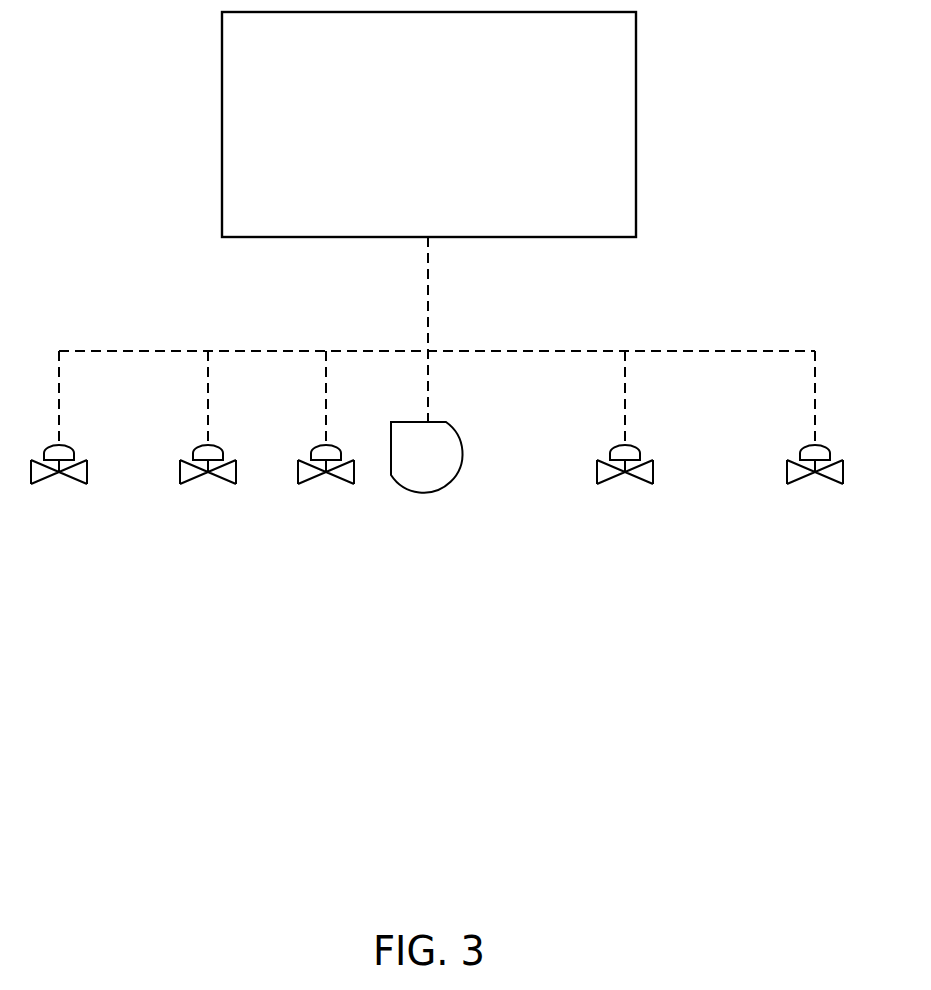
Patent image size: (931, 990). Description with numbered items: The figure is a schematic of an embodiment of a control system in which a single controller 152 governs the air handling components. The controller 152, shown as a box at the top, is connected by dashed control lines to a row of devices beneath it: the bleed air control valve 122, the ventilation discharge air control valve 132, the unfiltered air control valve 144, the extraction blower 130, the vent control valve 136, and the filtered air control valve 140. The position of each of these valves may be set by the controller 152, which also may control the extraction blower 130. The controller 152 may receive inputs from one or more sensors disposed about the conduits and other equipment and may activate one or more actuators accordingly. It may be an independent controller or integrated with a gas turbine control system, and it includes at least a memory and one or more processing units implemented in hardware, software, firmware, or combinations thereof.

The controller 152 is at (429, 124).
The bleed air control valve 122 is at (76, 481).
The ventilation discharge air control valve 132 is at (233, 482).
The unfiltered air control valve 144 is at (350, 481).
The extraction blower 130 is at (448, 422).
The vent control valve 136 is at (603, 483).
The filtered air control valve 140 is at (793, 483).